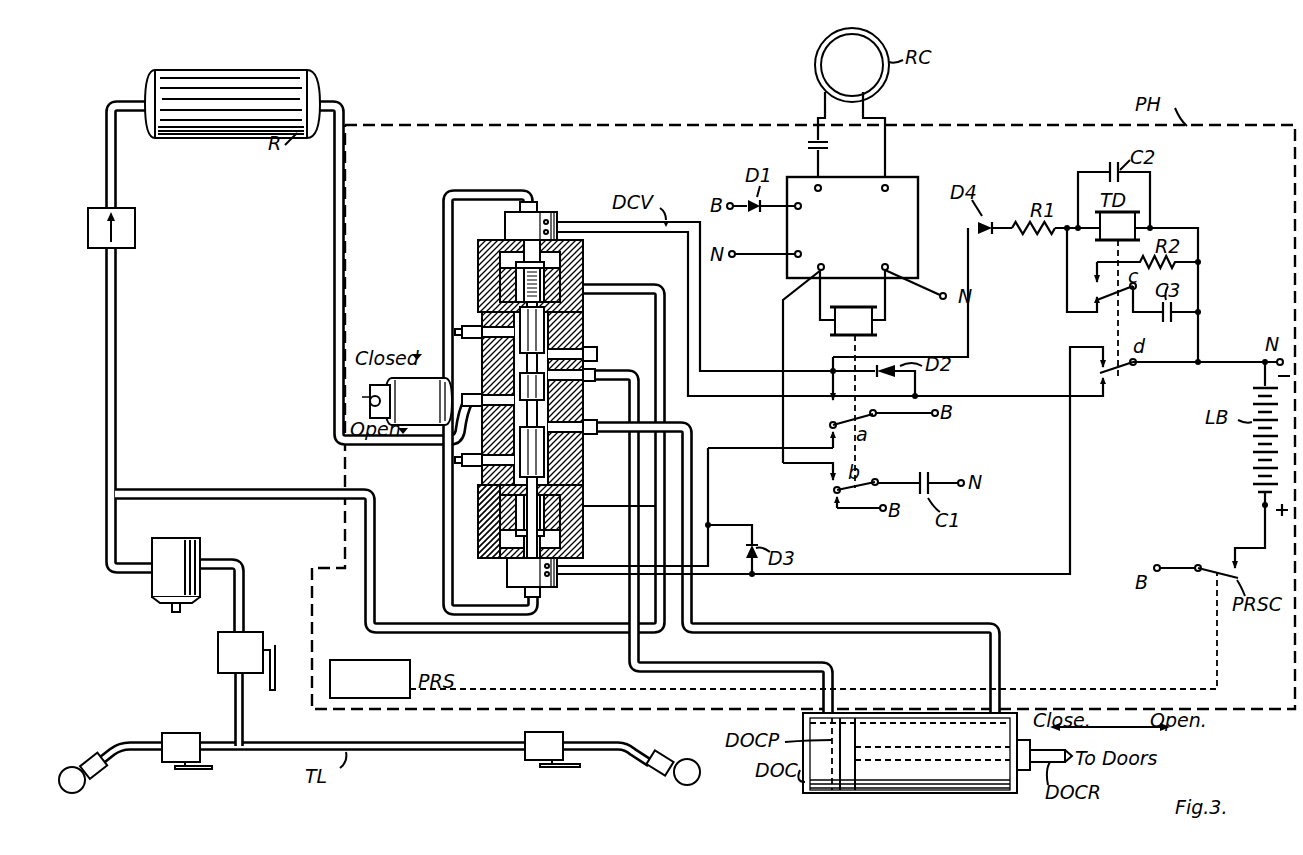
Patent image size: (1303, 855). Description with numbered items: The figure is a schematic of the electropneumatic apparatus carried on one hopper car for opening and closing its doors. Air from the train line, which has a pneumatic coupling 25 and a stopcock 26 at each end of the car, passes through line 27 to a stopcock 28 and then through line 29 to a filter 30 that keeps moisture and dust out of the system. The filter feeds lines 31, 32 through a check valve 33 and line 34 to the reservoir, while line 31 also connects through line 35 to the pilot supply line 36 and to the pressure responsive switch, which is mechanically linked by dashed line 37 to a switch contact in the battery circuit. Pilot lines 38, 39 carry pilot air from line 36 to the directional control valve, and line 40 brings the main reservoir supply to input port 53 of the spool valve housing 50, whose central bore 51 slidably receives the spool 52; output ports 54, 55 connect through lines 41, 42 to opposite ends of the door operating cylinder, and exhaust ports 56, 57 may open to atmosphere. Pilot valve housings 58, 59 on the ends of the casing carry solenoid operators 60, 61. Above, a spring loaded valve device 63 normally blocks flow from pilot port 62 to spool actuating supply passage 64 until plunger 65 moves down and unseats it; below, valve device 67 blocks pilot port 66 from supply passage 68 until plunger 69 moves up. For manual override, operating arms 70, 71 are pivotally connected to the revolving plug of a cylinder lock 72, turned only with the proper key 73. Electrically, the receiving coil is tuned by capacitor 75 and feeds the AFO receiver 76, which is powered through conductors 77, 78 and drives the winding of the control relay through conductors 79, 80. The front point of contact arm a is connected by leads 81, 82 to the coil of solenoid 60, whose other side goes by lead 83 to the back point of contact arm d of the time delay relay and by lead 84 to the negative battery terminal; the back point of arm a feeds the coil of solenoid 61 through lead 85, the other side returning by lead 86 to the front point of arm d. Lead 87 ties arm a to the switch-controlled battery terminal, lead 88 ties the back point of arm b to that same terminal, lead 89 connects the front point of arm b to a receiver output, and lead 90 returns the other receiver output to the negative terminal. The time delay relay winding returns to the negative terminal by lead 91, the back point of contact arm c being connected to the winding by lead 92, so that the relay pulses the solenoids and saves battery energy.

The pneumatic coupling 25 is at (698, 786).
The stopcock 26 is at (527, 758).
The line 27 is at (244, 727).
The stopcock 28 is at (264, 636).
The line 29 is at (236, 568).
The filter 30 is at (186, 538).
The line 31 is at (119, 520).
The line 32 is at (119, 305).
The check valve 33 is at (135, 228).
The line 34 is at (119, 165).
The line 35 is at (284, 492).
The pilot supply line 36 is at (600, 627).
The dashed line 37 is at (1062, 688).
The air pilot line 38 is at (585, 513).
The air pilot line 39 is at (653, 290).
The line 40 is at (333, 253).
The line 41 is at (808, 662).
The line 42 is at (877, 620).
The main spool valve housing 50 is at (584, 325).
The central bore 51 is at (590, 392).
The spool 52 is at (585, 464).
The input port 53 is at (486, 388).
The output port 54 is at (590, 352).
The output port 55 is at (590, 440).
The exhaust port 56 is at (485, 334).
The exhaust port 57 is at (472, 470).
The upper pilot valve housing 58 is at (583, 262).
The lower air pilot housing 59 is at (478, 540).
The upper solenoid operator 60 is at (540, 212).
The lower solenoid operator 61 is at (560, 590).
The pilot port 62 is at (583, 278).
The spring loaded valve device 63 is at (545, 267).
The spool actuating supply passage 64 is at (486, 282).
The armature plunger 65 is at (505, 226).
The pilot port 66 is at (585, 490).
The spring loaded valve device 67 is at (584, 547).
The spool actuating supply passage 68 is at (512, 560).
The armature plunger 69 is at (510, 568).
The operating arm 70 is at (470, 195).
The operating arm 71 is at (445, 604).
The cylinder lock 72 is at (416, 381).
The key 73 is at (386, 394).
The capacitor 75 is at (817, 116).
The AFO receiver 76 is at (918, 188).
The conductor 77 is at (775, 225).
The conductor 78 is at (768, 262).
The conductor 79 is at (835, 316).
The conductor 80 is at (872, 318).
The lead 81 is at (833, 386).
The lead 82 is at (748, 372).
The lead 83 is at (713, 396).
The lead 84 is at (1162, 364).
The lead 85 is at (730, 450).
The lead 86 is at (1014, 574).
The lead 87 is at (928, 416).
The lead 88 is at (858, 512).
The lead 89 is at (782, 437).
The lead 90 is at (942, 293).
The lead 91 is at (1198, 287).
The lead 92 is at (1067, 288).